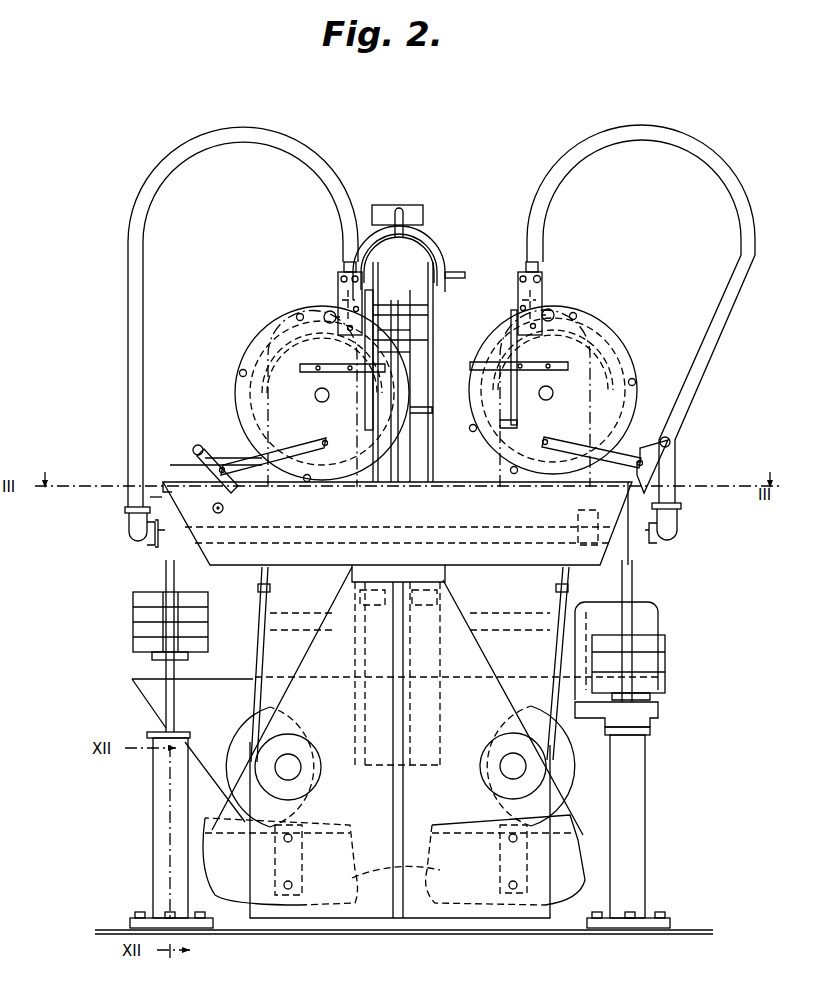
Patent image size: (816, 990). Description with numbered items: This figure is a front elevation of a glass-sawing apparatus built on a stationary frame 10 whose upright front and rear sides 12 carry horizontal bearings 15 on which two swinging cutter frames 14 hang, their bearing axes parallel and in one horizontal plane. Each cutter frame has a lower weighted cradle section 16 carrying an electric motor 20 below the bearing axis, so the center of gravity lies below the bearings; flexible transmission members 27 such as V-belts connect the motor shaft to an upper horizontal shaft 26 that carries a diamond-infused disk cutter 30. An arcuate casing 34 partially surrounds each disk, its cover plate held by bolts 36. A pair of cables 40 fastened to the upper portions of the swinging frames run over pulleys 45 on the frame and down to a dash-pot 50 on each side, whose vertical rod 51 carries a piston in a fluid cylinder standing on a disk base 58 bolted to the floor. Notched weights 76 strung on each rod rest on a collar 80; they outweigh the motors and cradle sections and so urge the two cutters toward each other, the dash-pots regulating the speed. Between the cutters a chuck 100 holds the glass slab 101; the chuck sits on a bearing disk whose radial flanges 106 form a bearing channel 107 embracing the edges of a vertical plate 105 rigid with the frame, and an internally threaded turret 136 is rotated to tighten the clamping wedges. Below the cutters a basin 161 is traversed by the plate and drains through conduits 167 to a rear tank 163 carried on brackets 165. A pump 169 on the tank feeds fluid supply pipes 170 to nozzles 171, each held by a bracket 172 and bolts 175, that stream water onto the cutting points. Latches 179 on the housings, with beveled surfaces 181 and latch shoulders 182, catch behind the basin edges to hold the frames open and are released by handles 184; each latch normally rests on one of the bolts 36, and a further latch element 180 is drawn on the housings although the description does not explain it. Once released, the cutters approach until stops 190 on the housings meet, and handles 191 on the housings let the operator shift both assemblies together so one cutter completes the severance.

The stationary frame 10 is at (403, 934).
The front and rear sides 12 is at (586, 862).
The swinging cutter frame 14 is at (258, 586).
The horizontal bearings 15 is at (275, 768).
The weighted cradle section 16 is at (355, 872).
The electric motor 20 is at (242, 742).
The upper horizontal shaft 26 is at (315, 396).
The flexible transmission members 27 is at (258, 633).
The disk cutter 30 is at (250, 350).
The arcuate casing 34 is at (262, 332).
The bolts 36 is at (240, 470).
The cables 40 is at (630, 546).
The pulleys 45 is at (185, 547).
The dash-pot 50 is at (150, 866).
The vertical rod 51 is at (176, 694).
The disk base 58 is at (130, 922).
The weights 76 is at (140, 633).
The collar 80 is at (152, 656).
The chuck 100 is at (434, 316).
The glass slab or plate 101 is at (423, 215).
The vertical plate 105 is at (400, 350).
The radial flanges 106 is at (398, 328).
The bearing channel 107 is at (404, 297).
The turret 136 is at (430, 262).
The basin 161 is at (150, 500).
The rear tank 163 is at (150, 702).
The brackets 165 is at (288, 900).
The conduits 167 is at (402, 796).
The pump 169 is at (660, 630).
The fluid supply pipes 170 is at (127, 532).
The nozzle 171 is at (513, 295).
The bracket 172 is at (328, 318).
The bolts 175 is at (537, 275).
The latch 179 is at (195, 446).
The arm 180 is at (333, 424).
The beveled surfaces 181 is at (170, 465).
The latch shoulders 182 is at (668, 440).
The handles 184 is at (194, 449).
The stops 190 is at (384, 355).
The handles 191 is at (326, 313).